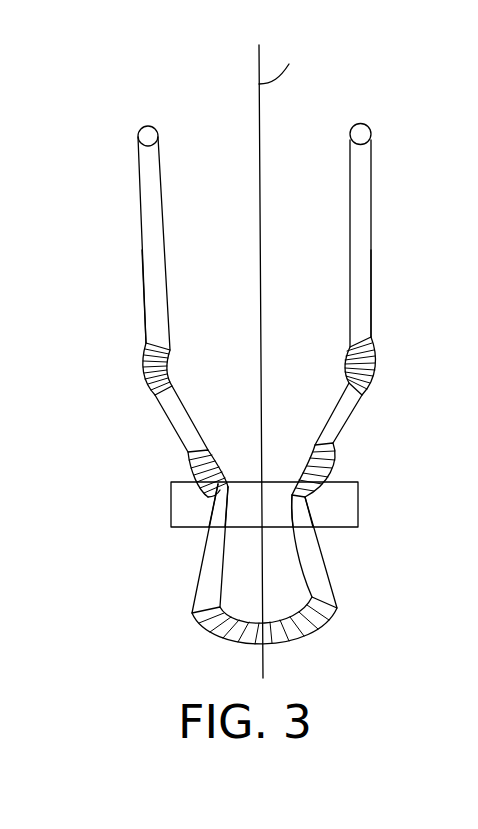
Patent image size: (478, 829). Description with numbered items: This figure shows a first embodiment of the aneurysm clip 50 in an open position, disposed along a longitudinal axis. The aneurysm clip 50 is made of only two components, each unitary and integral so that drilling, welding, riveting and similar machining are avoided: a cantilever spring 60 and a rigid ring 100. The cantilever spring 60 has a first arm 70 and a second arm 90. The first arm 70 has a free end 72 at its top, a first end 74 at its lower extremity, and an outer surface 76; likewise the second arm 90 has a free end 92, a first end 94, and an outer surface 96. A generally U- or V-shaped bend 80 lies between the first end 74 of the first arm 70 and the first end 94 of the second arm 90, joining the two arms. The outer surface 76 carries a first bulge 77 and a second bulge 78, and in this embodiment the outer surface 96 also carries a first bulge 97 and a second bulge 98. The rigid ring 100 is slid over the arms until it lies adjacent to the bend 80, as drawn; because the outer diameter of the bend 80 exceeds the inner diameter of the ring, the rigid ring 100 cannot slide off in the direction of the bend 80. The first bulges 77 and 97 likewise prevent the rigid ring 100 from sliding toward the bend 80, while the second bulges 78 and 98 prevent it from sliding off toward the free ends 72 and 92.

The aneurysm clip 50 is at (235, 359).
The free end 72 is at (150, 126).
The first arm 70 is at (150, 216).
The outer surface 76 is at (143, 285).
The second bulge 78 is at (146, 388).
The first bulge 77 is at (193, 468).
The first end 74 is at (206, 497).
The free end 92 is at (363, 124).
The second arm 90 is at (362, 210).
The outer surface 96 is at (373, 270).
The second bulge 98 is at (375, 357).
The first bulge 97 is at (335, 462).
The first end 94 is at (322, 495).
The rigid ring 100 is at (346, 517).
The cantilever spring 60 is at (317, 583).
The bend 80 is at (317, 625).